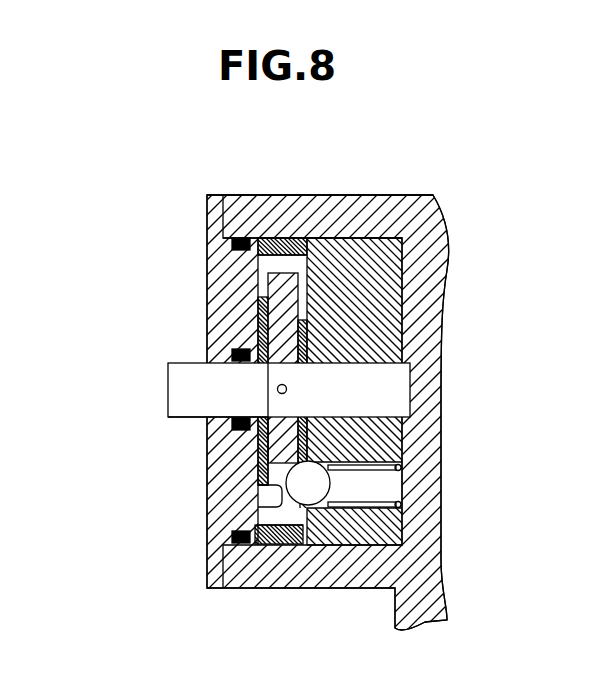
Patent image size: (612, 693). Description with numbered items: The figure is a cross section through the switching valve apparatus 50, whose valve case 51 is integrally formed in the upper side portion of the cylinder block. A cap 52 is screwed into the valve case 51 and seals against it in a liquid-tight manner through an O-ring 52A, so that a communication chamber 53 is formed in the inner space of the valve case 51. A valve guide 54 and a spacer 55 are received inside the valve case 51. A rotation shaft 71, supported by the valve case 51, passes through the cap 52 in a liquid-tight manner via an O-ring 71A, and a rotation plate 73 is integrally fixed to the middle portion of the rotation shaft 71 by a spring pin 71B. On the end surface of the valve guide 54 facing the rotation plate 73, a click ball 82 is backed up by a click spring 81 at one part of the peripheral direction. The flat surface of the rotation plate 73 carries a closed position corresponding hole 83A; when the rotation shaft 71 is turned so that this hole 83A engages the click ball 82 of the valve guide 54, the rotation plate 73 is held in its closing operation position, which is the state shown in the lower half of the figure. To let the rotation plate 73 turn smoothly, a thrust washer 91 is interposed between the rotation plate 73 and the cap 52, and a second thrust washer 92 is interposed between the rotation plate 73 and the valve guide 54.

The switching valve apparatus 50 is at (129, 245).
The valve case 51 is at (325, 205).
The cap 52 is at (223, 206).
The O-ring 52A is at (243, 238).
The communication chamber 53 is at (268, 263).
The valve guide 54 is at (378, 248).
The spacer 55 is at (286, 238).
The rotation shaft 71 is at (176, 402).
The O-ring 71A is at (210, 425).
The spring pin 71B is at (277, 389).
The rotation plate 73 is at (262, 458).
The click spring 81 is at (382, 471).
The click ball 82 is at (310, 488).
The closed position corresponding hole 83A is at (258, 496).
The thrust washer 91 is at (262, 306).
The thrust washer 92 is at (302, 344).